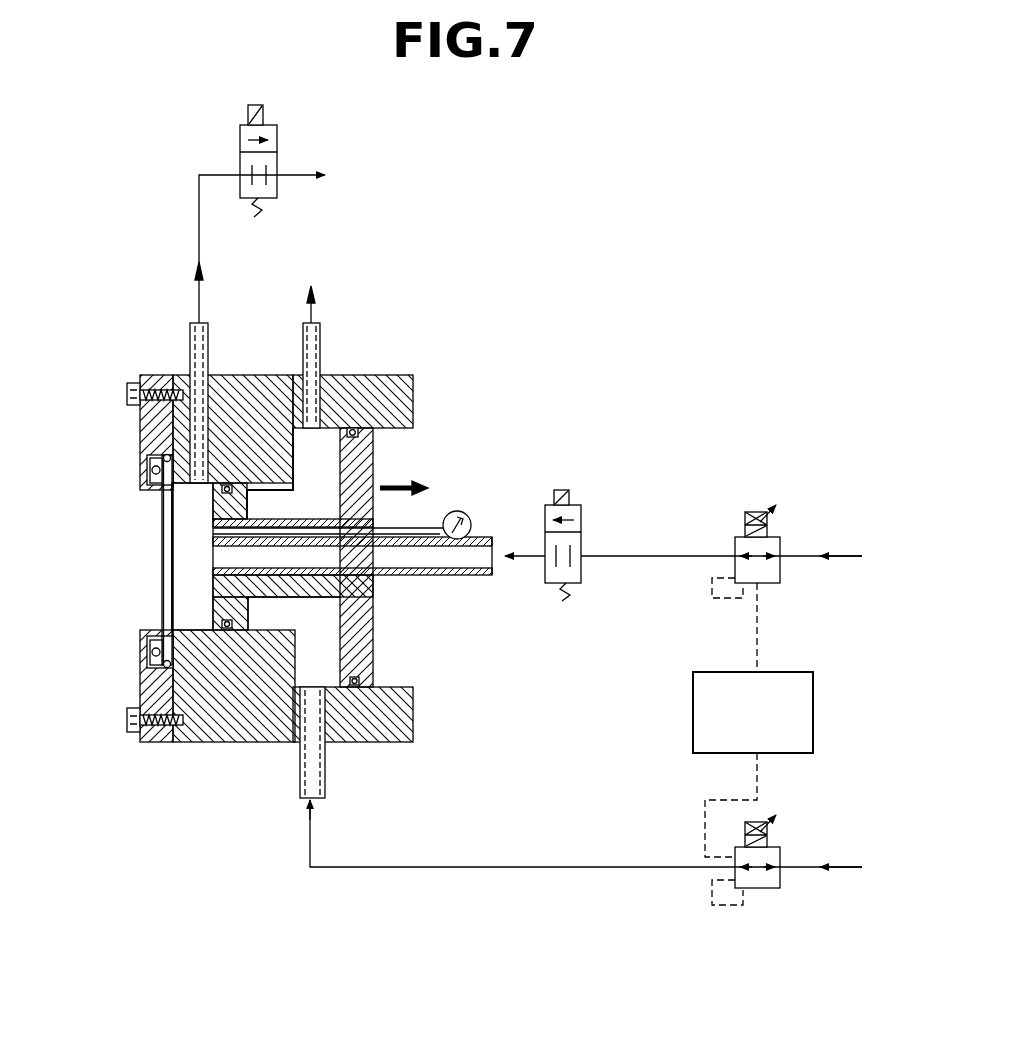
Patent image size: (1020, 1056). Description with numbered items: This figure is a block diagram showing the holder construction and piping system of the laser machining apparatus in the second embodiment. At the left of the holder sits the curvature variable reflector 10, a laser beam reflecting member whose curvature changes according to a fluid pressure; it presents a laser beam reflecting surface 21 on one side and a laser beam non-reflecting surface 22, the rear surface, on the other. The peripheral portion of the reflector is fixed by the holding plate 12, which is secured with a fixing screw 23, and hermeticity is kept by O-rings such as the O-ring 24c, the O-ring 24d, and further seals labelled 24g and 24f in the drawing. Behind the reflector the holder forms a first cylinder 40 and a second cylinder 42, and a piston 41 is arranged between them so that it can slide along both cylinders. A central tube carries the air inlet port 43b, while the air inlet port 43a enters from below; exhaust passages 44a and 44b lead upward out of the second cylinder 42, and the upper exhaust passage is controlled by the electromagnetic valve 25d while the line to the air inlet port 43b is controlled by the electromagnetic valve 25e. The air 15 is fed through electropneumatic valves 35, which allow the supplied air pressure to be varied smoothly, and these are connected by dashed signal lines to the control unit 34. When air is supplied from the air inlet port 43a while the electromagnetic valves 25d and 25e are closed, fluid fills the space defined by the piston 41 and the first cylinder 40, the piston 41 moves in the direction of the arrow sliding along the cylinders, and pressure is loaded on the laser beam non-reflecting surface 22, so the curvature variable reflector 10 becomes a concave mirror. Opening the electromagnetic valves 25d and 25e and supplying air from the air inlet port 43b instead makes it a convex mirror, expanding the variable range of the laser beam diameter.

The curvature variable reflector 10 is at (165, 594).
The holding plate 12 is at (152, 742).
The air 15 is at (524, 556).
The laser beam reflecting surface 21 is at (160, 548).
The laser beam non-reflecting surface 22 is at (178, 556).
The fixing screw 23 is at (128, 720).
The O-ring 24c is at (150, 470).
The O-ring 24d is at (164, 456).
The chamber 24f is at (292, 462).
The O-ring 24g is at (360, 432).
The electromagnetic valve 25d is at (278, 134).
The electromagnetic valve 25e is at (582, 512).
The control unit 34 is at (814, 720).
The electropneumatic valve 35 is at (781, 552).
The cylinder (1) 40 is at (414, 396).
The piston 41 is at (374, 644).
The cylinder (2) 42 is at (250, 376).
The air inlet port 43a is at (326, 770).
The air inlet port 43b is at (458, 576).
The exhaust pipe 44a is at (320, 340).
The exhaust pipe 44b is at (190, 346).